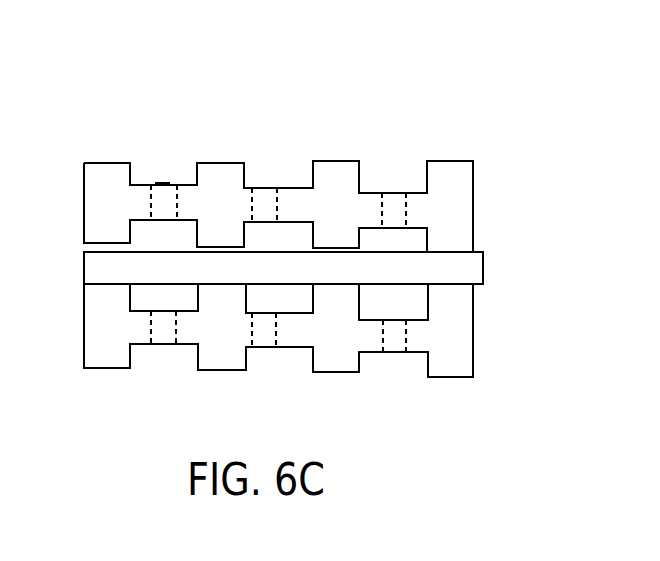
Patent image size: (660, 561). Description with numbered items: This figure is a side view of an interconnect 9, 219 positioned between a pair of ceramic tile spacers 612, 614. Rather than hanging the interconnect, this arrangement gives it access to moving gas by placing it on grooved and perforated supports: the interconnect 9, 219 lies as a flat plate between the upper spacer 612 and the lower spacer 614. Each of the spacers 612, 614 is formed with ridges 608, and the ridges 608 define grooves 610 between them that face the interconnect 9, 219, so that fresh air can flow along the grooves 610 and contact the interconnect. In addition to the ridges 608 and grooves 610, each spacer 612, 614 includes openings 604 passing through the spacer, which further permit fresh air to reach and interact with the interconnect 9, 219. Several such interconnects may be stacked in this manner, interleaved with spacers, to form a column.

The openings 604 is at (163, 185).
The grooves 610 is at (283, 185).
The ridges 608 is at (344, 161).
The ceramic tile spacer 612 is at (473, 195).
The interconnect 9 is at (363, 245).
The interconnect 219 is at (483, 265).
The ceramic tile spacer 614 is at (473, 352).